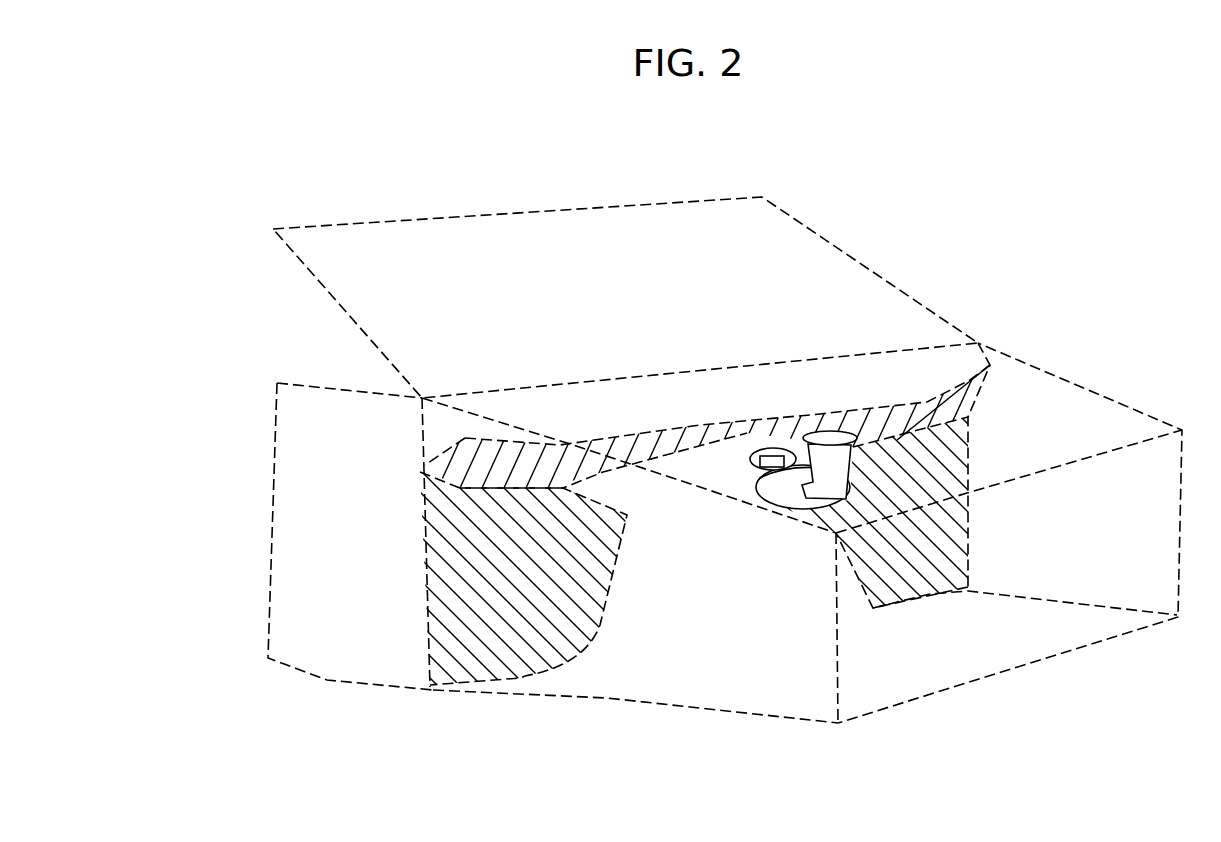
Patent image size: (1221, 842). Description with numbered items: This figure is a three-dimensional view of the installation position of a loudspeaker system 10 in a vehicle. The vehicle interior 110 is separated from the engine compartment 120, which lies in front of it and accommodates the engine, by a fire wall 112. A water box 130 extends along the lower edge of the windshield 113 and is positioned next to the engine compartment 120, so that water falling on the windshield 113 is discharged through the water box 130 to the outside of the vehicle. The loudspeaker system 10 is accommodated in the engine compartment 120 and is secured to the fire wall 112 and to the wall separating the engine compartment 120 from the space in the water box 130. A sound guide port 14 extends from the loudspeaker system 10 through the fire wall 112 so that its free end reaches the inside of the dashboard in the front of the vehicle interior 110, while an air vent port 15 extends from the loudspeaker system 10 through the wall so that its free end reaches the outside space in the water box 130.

The loudspeaker system 10 is at (777, 495).
The sound guide port 14 is at (775, 440).
The air vent port 15 is at (833, 468).
The vehicle interior 110 is at (826, 337).
The fire wall 112 is at (467, 472).
The windshield 113 is at (450, 228).
The engine compartment 120 is at (1055, 413).
The water box 130 is at (425, 431).